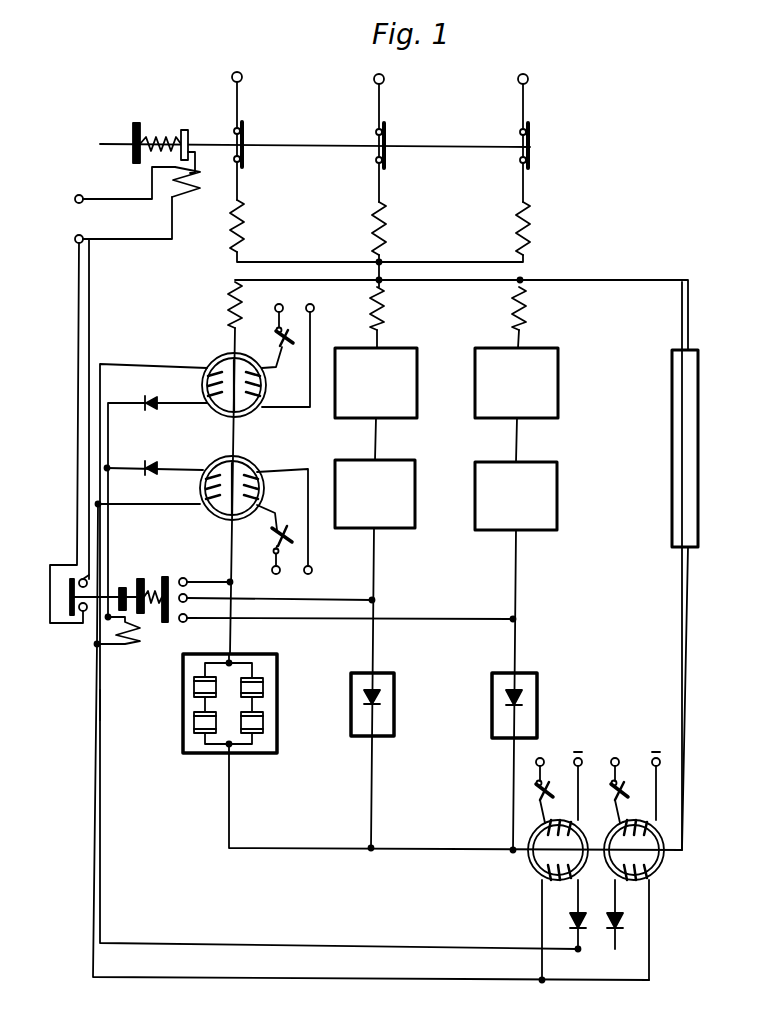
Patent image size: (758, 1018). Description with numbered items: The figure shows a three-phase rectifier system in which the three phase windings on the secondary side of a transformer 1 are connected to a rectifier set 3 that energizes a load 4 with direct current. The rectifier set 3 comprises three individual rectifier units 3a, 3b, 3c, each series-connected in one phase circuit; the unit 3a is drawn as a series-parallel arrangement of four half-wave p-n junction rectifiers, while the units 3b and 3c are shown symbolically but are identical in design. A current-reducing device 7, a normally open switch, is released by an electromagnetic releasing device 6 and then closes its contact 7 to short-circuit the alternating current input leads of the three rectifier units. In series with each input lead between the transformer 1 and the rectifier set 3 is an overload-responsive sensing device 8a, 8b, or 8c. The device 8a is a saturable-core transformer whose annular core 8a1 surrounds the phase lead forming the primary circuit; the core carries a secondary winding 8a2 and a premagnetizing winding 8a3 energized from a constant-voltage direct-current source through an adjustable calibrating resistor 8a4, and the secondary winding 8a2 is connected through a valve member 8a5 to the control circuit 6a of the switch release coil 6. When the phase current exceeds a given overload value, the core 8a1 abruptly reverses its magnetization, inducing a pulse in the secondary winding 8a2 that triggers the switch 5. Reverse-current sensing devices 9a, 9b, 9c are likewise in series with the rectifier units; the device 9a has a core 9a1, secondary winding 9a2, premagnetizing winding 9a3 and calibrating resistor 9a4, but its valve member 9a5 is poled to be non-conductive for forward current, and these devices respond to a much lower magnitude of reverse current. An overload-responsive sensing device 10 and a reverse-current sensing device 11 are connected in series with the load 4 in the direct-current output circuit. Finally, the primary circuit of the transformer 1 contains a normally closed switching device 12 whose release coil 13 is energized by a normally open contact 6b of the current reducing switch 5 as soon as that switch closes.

The transformer 1 is at (209, 279).
The rectifier set 3 is at (316, 694).
The rectifier unit 3a is at (272, 726).
The rectifier unit 3b is at (392, 726).
The rectifier unit 3c is at (536, 726).
The load 4 is at (672, 477).
The current reducing switch 5 is at (141, 566).
The electromagnetic releasing device 6 is at (134, 663).
The control circuit 6a is at (102, 707).
The normally open contact 6b is at (70, 597).
The current-reducing device 7 is at (168, 577).
The overload-responsive sensing device 8a is at (224, 354).
The annular core 8a1 is at (213, 396).
The secondary winding 8a2 is at (339, 656).
The premagnetizing winding 8a3 is at (280, 355).
The adjustable calibrating resistor 8a4 is at (284, 334).
The valve member 8a5 is at (153, 414).
The overload-responsive sensing device 8b is at (376, 374).
The overload-responsive sensing device 8c is at (516, 374).
The reverse-current sensing device 9a is at (216, 536).
The annular core 9a1 is at (254, 477).
The secondary winding 9a2 is at (371, 723).
The premagnetizing winding 9a3 is at (278, 521).
The adjustable calibrating resistor 9a4 is at (284, 542).
The valve member 9a5 is at (153, 457).
The reverse-current sensing device 9b is at (375, 633).
The reverse-current sensing device 9c is at (516, 634).
The overload-responsive sensing device 10 is at (545, 864).
The reverse-current sensing device 11 is at (645, 862).
The switching device 12 is at (437, 132).
The release coil 13 is at (150, 183).